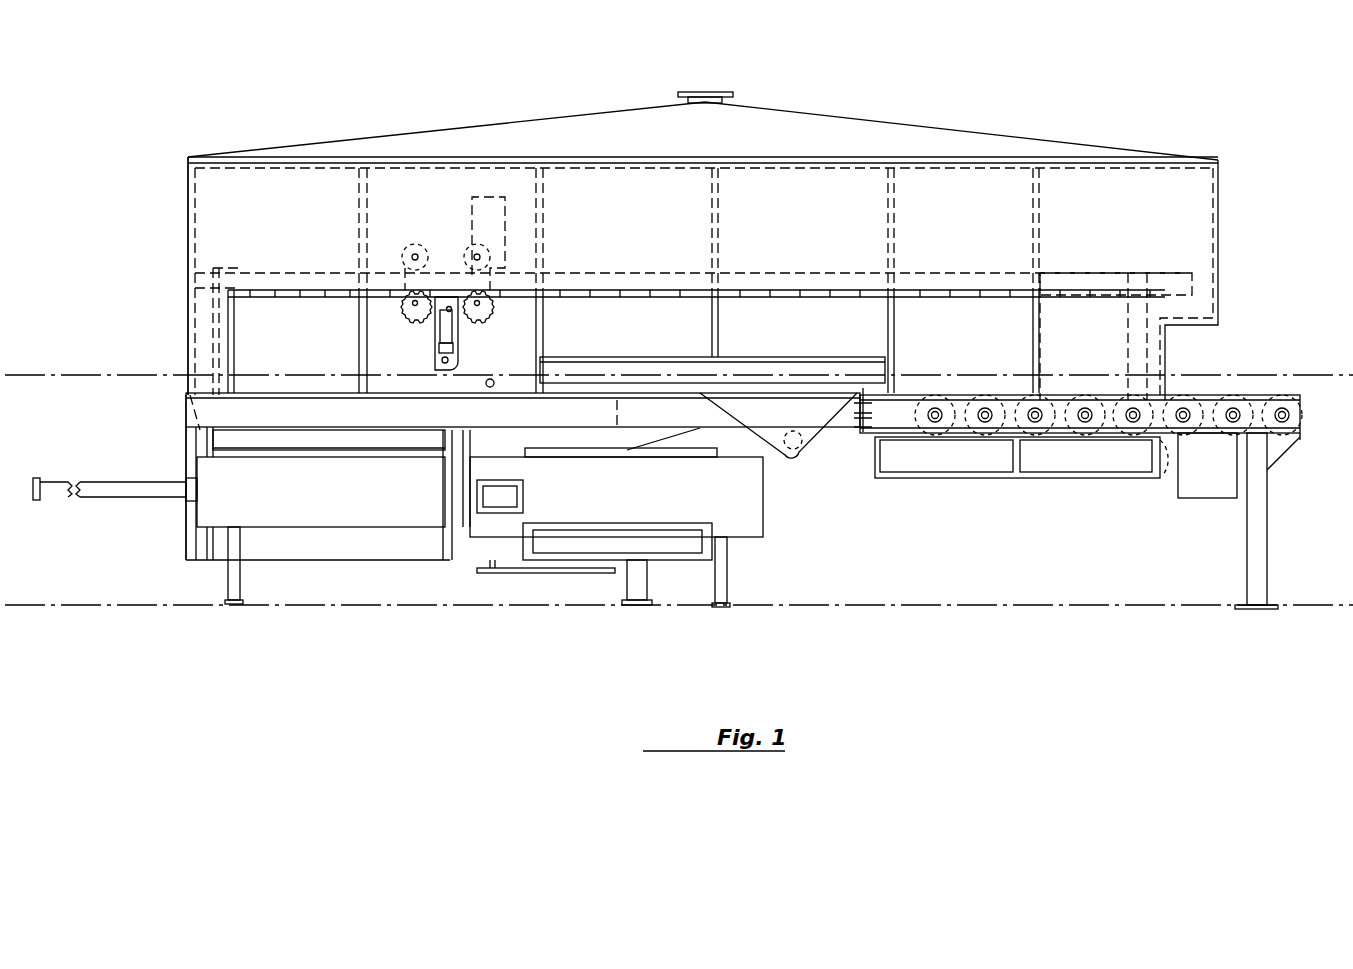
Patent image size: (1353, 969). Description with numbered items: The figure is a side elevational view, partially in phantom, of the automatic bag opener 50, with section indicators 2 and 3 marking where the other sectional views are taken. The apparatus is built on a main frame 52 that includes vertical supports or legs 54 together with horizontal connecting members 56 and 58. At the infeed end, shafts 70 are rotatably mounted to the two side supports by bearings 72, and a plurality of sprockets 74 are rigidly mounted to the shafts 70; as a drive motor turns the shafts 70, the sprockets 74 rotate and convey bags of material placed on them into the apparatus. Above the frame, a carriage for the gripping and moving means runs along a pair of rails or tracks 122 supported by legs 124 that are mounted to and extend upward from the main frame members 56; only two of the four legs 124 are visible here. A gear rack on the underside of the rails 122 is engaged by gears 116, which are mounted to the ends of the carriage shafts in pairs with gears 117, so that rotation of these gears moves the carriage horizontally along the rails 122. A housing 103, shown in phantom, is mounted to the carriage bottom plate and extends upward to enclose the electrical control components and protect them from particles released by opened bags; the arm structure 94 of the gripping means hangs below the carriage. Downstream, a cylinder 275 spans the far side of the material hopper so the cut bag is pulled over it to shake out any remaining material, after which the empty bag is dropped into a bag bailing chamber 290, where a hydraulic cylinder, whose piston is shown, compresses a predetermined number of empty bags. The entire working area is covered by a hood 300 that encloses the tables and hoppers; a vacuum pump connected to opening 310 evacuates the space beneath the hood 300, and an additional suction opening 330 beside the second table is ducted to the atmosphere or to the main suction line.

The section line 2- 2 is at (16, 372).
The section line 3- 3 is at (1352, 78).
The automatic bag opener 50 is at (170, 318).
The main frame 52 is at (1290, 560).
The legs 54 is at (1250, 524).
The horizontal connecting members 56 is at (398, 421).
The horizontal connecting members 58 is at (187, 288).
The shafts 70 is at (928, 420).
The bearings 72 is at (932, 420).
The sprockets 74 is at (1162, 490).
The cutter bracket 94 is at (500, 320).
The housing 103 is at (508, 236).
The gears 116 is at (477, 313).
The gears 117 is at (410, 312).
The rails 122 is at (1068, 290).
The legs 124 is at (205, 347).
The cylinder 275 is at (497, 378).
The bag bailing chamber 290 is at (360, 499).
The hood 300 is at (1008, 108).
The opening 310 is at (705, 92).
The suction opening 330 is at (805, 450).